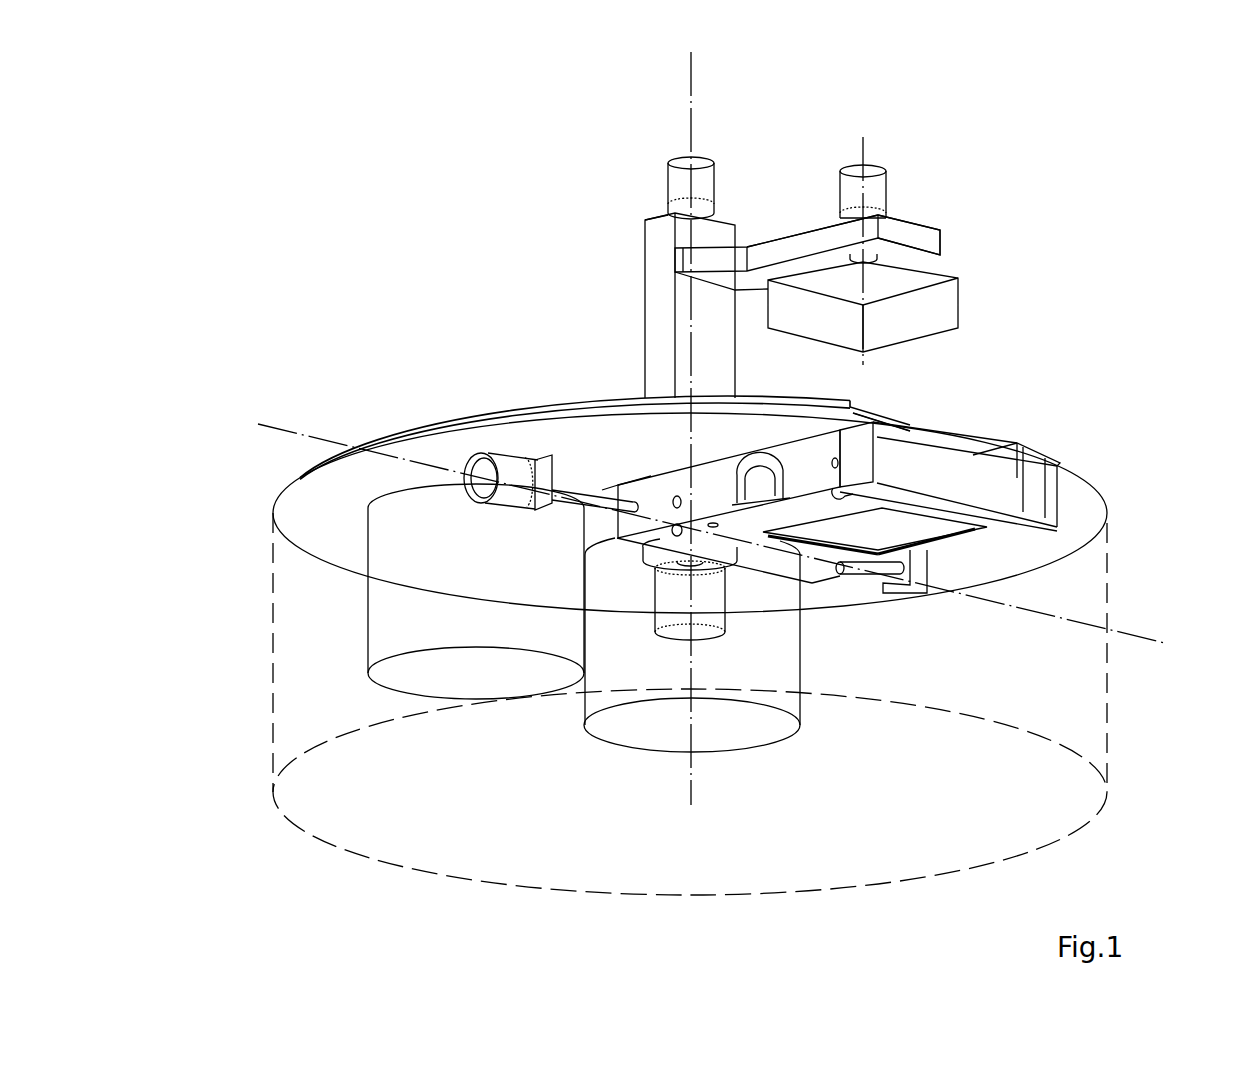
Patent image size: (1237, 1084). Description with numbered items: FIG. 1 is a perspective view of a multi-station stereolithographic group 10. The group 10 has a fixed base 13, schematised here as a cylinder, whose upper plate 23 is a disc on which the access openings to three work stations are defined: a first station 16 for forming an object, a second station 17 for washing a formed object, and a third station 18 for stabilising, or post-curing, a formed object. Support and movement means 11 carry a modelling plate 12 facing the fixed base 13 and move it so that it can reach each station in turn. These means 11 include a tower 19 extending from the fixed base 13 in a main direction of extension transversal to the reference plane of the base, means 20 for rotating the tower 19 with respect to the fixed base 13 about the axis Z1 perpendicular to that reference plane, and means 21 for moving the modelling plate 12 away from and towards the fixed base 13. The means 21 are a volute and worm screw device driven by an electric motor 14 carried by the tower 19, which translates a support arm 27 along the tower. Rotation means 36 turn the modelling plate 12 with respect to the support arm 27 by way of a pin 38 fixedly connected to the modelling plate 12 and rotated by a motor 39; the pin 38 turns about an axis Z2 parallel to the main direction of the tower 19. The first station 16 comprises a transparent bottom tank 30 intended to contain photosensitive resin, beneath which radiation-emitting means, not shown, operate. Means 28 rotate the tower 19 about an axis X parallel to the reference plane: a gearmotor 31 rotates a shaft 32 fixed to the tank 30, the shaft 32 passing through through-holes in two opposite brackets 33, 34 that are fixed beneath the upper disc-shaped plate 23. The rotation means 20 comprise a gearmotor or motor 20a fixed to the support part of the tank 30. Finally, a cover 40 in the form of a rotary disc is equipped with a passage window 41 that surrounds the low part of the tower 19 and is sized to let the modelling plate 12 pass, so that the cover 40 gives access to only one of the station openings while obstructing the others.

The multi-station stereolithographic group 10 is at (452, 218).
The support and movement means 11 is at (807, 187).
The modelling plate 12 is at (950, 307).
The fixed base 13 is at (1120, 525).
The electric motor 14 is at (703, 191).
The first station 16 is at (1000, 432).
The second station 17 is at (340, 642).
The third station 18 is at (585, 745).
The tower 19 is at (647, 273).
The means for the rotation of the tower 20 is at (645, 599).
The gearmotor 20a is at (707, 613).
The means for the movement of the modelling plate 21 is at (660, 202).
The upper plate 23 is at (322, 500).
The support arm 27 is at (782, 247).
The means for the rotation of the tower about axis X 28 is at (500, 436).
The transparent bottom tank 30 is at (794, 679).
The gearmotor 31 is at (480, 467).
The shaft 32 is at (589, 493).
The bracket 33 is at (545, 470).
The bracket 34 is at (917, 565).
The rotation means 36 is at (897, 200).
The pin 38 is at (938, 232).
The motor 39 is at (870, 194).
The cover 40 is at (538, 405).
The passage window 41 is at (913, 423).
The axis X is at (1165, 643).
The axis Z1 is at (691, 86).
The rotation axis Z2 is at (863, 138).